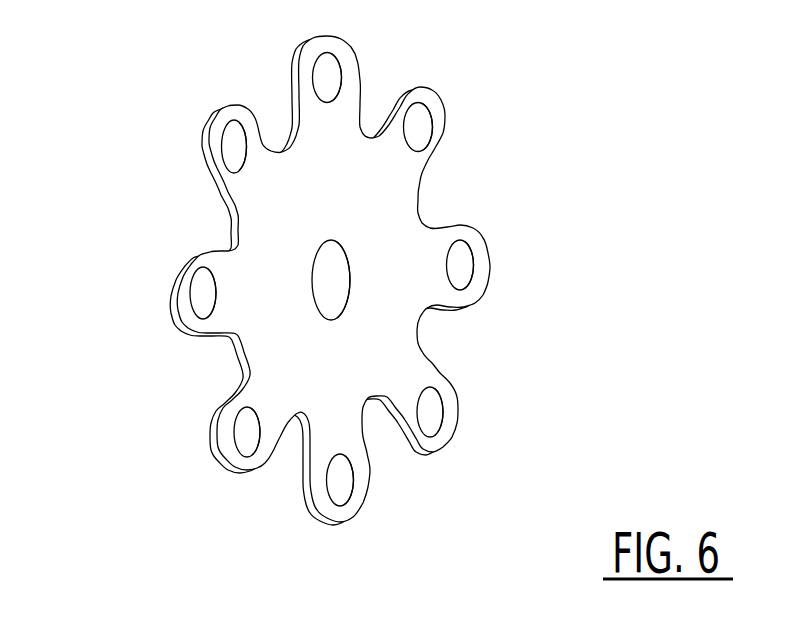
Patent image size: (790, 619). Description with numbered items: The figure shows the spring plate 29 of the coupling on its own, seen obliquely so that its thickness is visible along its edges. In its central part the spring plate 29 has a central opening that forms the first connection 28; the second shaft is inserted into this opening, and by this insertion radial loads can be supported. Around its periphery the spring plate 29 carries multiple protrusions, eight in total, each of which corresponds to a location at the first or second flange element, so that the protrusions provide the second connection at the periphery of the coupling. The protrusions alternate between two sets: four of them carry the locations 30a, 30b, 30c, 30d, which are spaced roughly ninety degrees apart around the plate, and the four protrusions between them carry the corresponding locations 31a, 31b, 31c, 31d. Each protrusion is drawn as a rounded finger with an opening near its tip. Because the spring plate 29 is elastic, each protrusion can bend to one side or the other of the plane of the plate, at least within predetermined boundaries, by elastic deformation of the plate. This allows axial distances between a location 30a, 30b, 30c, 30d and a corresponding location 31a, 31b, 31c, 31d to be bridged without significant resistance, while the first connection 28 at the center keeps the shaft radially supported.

The first connection 28 is at (335, 278).
The spring plate 29 is at (302, 183).
The location 30a is at (327, 72).
The location 30b is at (462, 265).
The location 30c is at (343, 483).
The location 30d is at (205, 293).
The corresponding location 31a is at (425, 122).
The corresponding location 31b is at (440, 413).
The corresponding location 31c is at (257, 442).
The corresponding location 31d is at (237, 142).